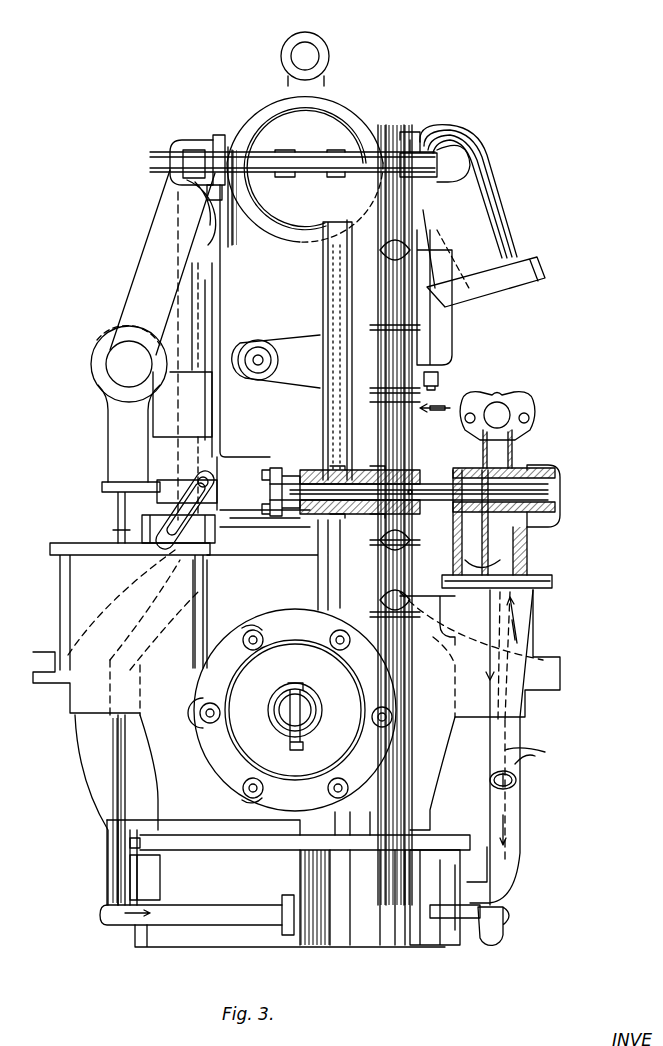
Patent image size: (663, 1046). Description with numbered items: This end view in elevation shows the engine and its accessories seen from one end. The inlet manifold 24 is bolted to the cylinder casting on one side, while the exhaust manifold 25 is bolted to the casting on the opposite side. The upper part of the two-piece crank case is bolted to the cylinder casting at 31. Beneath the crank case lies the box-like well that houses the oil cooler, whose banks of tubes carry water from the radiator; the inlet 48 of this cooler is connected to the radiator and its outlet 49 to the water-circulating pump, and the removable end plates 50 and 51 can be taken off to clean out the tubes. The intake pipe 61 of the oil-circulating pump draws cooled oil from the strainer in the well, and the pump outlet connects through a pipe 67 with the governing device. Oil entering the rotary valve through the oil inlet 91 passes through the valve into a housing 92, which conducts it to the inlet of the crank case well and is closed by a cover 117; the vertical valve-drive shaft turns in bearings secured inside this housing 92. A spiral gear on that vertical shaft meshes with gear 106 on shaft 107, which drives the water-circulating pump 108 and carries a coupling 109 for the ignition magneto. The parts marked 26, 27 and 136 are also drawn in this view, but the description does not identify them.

The inlet manifold 24 is at (145, 238).
The exhaust manifold 25 is at (505, 205).
The vertical rod 26 is at (398, 430).
The lifting ring 27 is at (309, 51).
The bolted connection 31 is at (268, 527).
The inlet 48 is at (516, 780).
The outlet 49 is at (508, 738).
The removable end plate 50 is at (143, 884).
The removable end plate 51 is at (455, 880).
The intake pipe 61 is at (505, 936).
The pipe 67 is at (118, 790).
The oil inlet 91 is at (217, 207).
The housing 92 is at (345, 292).
The gear 106 is at (366, 470).
The shaft 107 is at (330, 478).
The water-circulating pump 108 is at (505, 452).
The coupling 109 is at (268, 474).
The cover 117 is at (325, 126).
The stop 136 is at (440, 380).